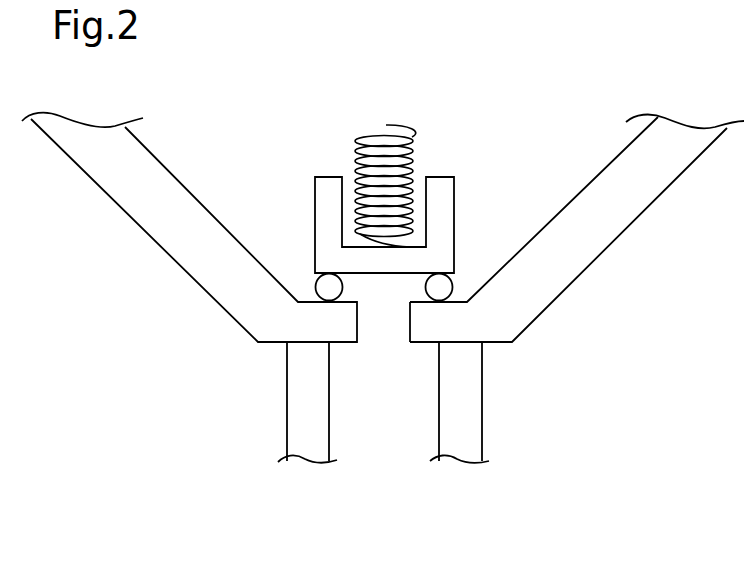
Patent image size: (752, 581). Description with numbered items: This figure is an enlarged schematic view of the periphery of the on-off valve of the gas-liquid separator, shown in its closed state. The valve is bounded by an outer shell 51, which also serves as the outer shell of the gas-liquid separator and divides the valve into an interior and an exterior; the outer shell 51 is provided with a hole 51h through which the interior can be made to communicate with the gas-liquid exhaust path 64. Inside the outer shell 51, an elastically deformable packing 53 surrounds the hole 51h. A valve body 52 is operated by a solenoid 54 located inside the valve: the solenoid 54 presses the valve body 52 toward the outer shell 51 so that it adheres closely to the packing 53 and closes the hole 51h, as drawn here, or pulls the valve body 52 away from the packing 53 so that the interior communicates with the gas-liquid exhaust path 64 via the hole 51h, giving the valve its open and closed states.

The outer shell 51 is at (552, 302).
The hole 51h is at (398, 343).
The valve body 52 is at (455, 203).
The packing 53 is at (316, 280).
The solenoid 54 is at (358, 140).
The gas-liquid exhaust path 64 is at (363, 433).